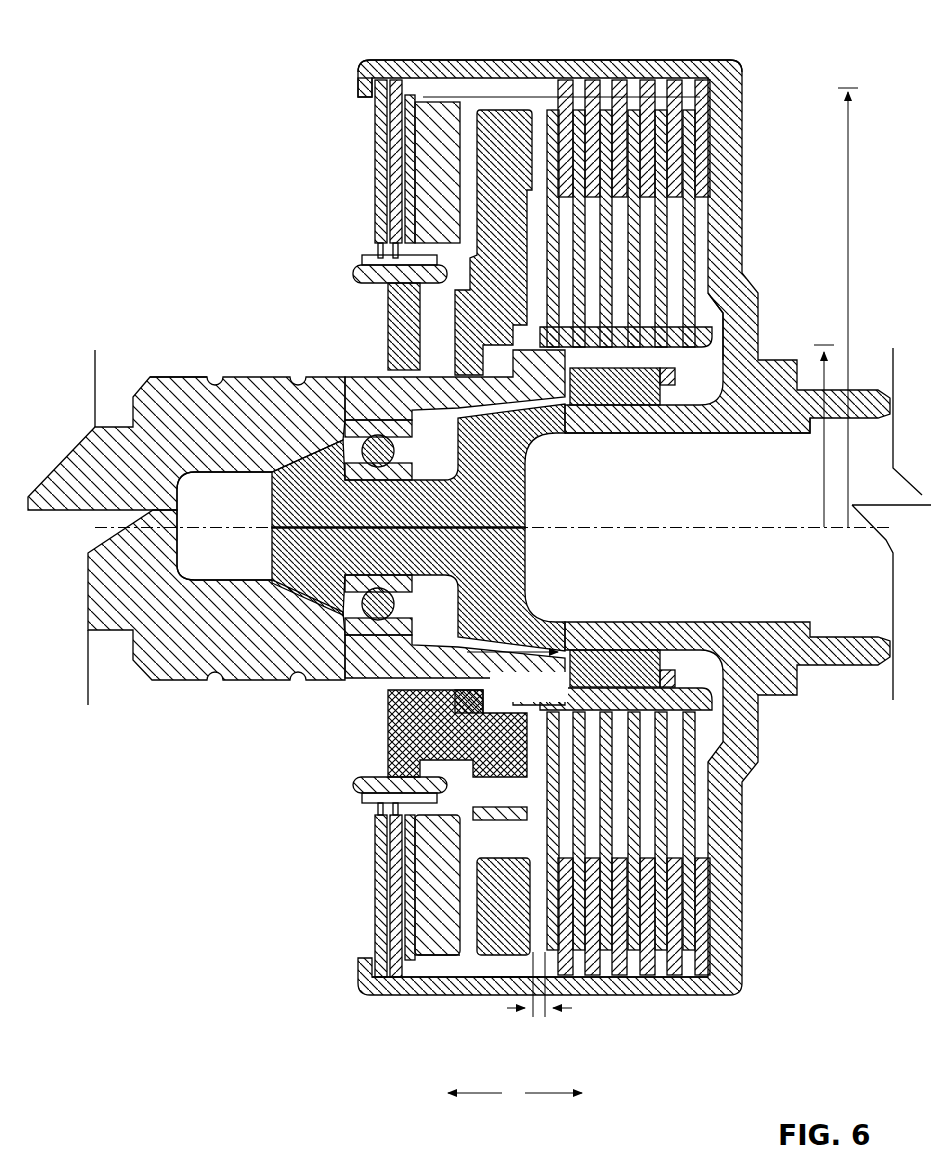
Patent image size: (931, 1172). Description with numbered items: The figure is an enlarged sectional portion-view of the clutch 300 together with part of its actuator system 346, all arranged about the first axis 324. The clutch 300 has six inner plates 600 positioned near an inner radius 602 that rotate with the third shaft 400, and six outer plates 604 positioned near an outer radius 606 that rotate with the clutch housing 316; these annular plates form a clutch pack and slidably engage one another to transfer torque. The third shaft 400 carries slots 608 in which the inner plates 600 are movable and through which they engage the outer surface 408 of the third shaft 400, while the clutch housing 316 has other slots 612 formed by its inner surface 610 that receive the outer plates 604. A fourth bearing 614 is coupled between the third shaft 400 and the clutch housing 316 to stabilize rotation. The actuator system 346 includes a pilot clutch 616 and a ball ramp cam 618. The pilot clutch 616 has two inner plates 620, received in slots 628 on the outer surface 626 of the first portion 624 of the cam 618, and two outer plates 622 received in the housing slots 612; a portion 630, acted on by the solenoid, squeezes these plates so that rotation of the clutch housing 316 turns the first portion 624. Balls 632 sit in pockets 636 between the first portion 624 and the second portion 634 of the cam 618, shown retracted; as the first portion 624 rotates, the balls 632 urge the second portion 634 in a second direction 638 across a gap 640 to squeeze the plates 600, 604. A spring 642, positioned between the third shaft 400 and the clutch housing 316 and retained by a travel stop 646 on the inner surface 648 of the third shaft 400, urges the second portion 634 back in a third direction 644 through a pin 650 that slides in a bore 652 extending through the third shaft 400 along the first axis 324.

The clutch 300 is at (772, 124).
The clutch housing 316 is at (358, 66).
The first axis 324 is at (212, 527).
The actuator system 346 is at (295, 917).
The third shaft 400 is at (296, 515).
The outer surface 408 is at (180, 376).
The inner plates 600 is at (708, 830).
The inner radius 602 is at (822, 460).
The outer plates 604 is at (690, 962).
The outer radius 606 is at (848, 272).
The slots 608 is at (683, 712).
The inner surface 610 is at (372, 90).
The slots 612 is at (515, 970).
The fourth bearing 614 is at (343, 648).
The pilot clutch 616 is at (423, 95).
The cam 618 is at (352, 274).
The inner plates 620 is at (352, 798).
The outer plates 622 is at (375, 823).
The first portion 624 is at (388, 300).
The outer surface 626 is at (430, 797).
The slots 628 is at (370, 797).
The portion 630 is at (432, 966).
The balls 632 is at (453, 688).
The second portion 634 is at (493, 108).
The pocket 636 is at (467, 652).
The second direction 638 is at (560, 1095).
The gap 640 is at (545, 1012).
The spring 642 is at (668, 400).
The third direction 644 is at (472, 1095).
The travel stop 646 is at (695, 420).
The inner surface 648 is at (737, 368).
The pin 650 is at (456, 670).
The bore 652 is at (568, 650).